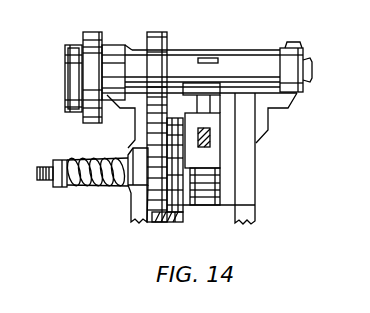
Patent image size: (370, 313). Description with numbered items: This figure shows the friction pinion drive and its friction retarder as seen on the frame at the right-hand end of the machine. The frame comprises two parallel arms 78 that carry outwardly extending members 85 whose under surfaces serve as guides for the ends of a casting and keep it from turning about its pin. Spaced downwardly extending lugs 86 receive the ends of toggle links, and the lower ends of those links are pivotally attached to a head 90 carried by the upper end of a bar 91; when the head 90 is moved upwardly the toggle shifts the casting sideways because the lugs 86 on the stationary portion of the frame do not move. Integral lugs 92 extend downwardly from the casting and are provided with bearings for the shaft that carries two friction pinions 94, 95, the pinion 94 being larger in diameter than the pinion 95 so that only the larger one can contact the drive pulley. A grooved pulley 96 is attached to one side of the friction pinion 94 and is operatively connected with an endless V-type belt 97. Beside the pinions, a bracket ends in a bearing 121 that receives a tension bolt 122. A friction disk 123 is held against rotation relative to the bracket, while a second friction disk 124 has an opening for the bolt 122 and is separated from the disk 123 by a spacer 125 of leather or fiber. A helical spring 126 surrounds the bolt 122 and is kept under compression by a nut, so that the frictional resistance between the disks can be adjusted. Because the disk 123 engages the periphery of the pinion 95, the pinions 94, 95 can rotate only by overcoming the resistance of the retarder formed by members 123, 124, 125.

The parallel arms 78 is at (248, 187).
The outwardly extending members 85 is at (302, 45).
The downwardly extending lugs 86 is at (226, 206).
The head 90 is at (201, 125).
The bar 91 is at (207, 145).
The integral lugs 92 is at (110, 55).
The friction pinion 94 is at (88, 33).
The friction pinion 95 is at (157, 38).
The grooved pulley 96 is at (65, 63).
The endless V-type belt 97 is at (76, 44).
The bearing 121 is at (128, 188).
The tension bolt 122 is at (48, 165).
The friction disk 123 is at (172, 223).
The friction disk 124 is at (178, 222).
The spacer 125 is at (175, 222).
The helical spring 126 is at (95, 154).